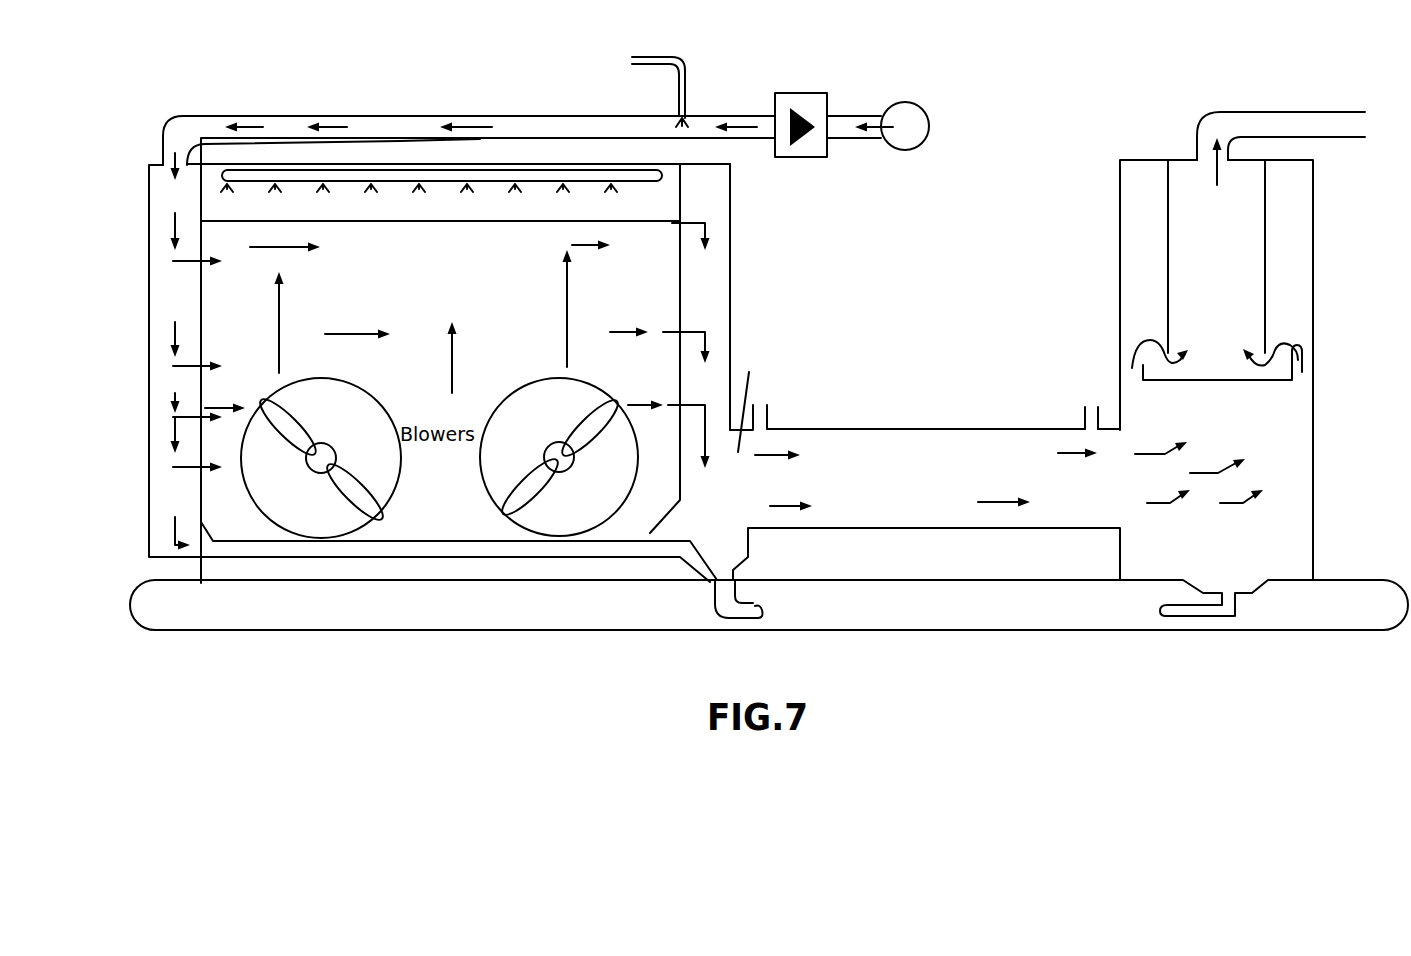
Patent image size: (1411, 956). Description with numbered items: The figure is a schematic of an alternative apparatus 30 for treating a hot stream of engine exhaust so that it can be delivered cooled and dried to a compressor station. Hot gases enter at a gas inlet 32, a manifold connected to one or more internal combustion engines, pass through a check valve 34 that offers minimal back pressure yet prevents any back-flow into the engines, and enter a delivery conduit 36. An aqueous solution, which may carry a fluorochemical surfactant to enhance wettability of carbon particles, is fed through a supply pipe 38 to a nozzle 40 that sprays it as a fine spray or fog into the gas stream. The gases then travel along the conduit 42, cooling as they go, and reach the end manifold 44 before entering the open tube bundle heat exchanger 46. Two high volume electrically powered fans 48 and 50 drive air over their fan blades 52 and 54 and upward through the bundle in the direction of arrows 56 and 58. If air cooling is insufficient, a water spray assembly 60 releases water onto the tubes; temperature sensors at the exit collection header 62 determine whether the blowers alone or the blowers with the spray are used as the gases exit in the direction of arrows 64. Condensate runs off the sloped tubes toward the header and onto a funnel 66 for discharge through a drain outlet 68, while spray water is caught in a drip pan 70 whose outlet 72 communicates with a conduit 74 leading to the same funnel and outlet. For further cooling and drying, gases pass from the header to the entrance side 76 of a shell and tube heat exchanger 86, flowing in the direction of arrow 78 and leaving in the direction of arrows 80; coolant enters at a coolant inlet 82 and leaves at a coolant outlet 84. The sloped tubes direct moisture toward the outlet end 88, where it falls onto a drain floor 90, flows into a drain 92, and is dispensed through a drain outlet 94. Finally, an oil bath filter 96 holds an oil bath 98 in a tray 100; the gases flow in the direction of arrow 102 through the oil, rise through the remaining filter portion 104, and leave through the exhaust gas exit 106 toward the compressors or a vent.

The apparatus 30 is at (885, 292).
The gas inlet 32 is at (910, 102).
The check valve 34 is at (813, 93).
The delivery conduit 36 is at (731, 112).
The supply pipe 38 is at (686, 63).
The nozzle 40 is at (676, 122).
The conduit 42 is at (385, 116).
The end manifold 44 is at (149, 212).
The open tube bundle heat exchanger 46 is at (531, 271).
The fan 48 is at (345, 385).
The fan 50 is at (578, 392).
The fan blades 52 is at (290, 412).
The fan blades 54 is at (587, 430).
The arrow 56 is at (281, 333).
The arrow 58 is at (570, 310).
The water spray assembly 60 is at (287, 170).
The exit collection header 62 is at (735, 280).
The arrows 64 is at (707, 223).
The funnel 66 is at (743, 556).
The drain outlet 68 is at (757, 608).
The drip pan 70 is at (420, 540).
The outlet 72 is at (650, 528).
The conduit 74 is at (712, 540).
The entrance side 76 is at (751, 398).
The arrow 78 is at (972, 492).
The arrows 80 is at (1168, 447).
The coolant inlet 82 is at (1085, 420).
The coolant outlet 84 is at (770, 419).
The shell and tube heat exchanger 86 is at (945, 429).
The outlet end 88 is at (1122, 472).
The drain floor 90 is at (1160, 580).
The drain 92 is at (1258, 590).
The drain outlet 94 is at (1175, 590).
The oil bath filter 96 is at (1268, 259).
The oil bath 98 is at (1283, 375).
The tray 100 is at (1265, 380).
The arrow 102 is at (1292, 352).
The filter portion 104 is at (1267, 204).
The exhaust gas exit 106 is at (1277, 113).